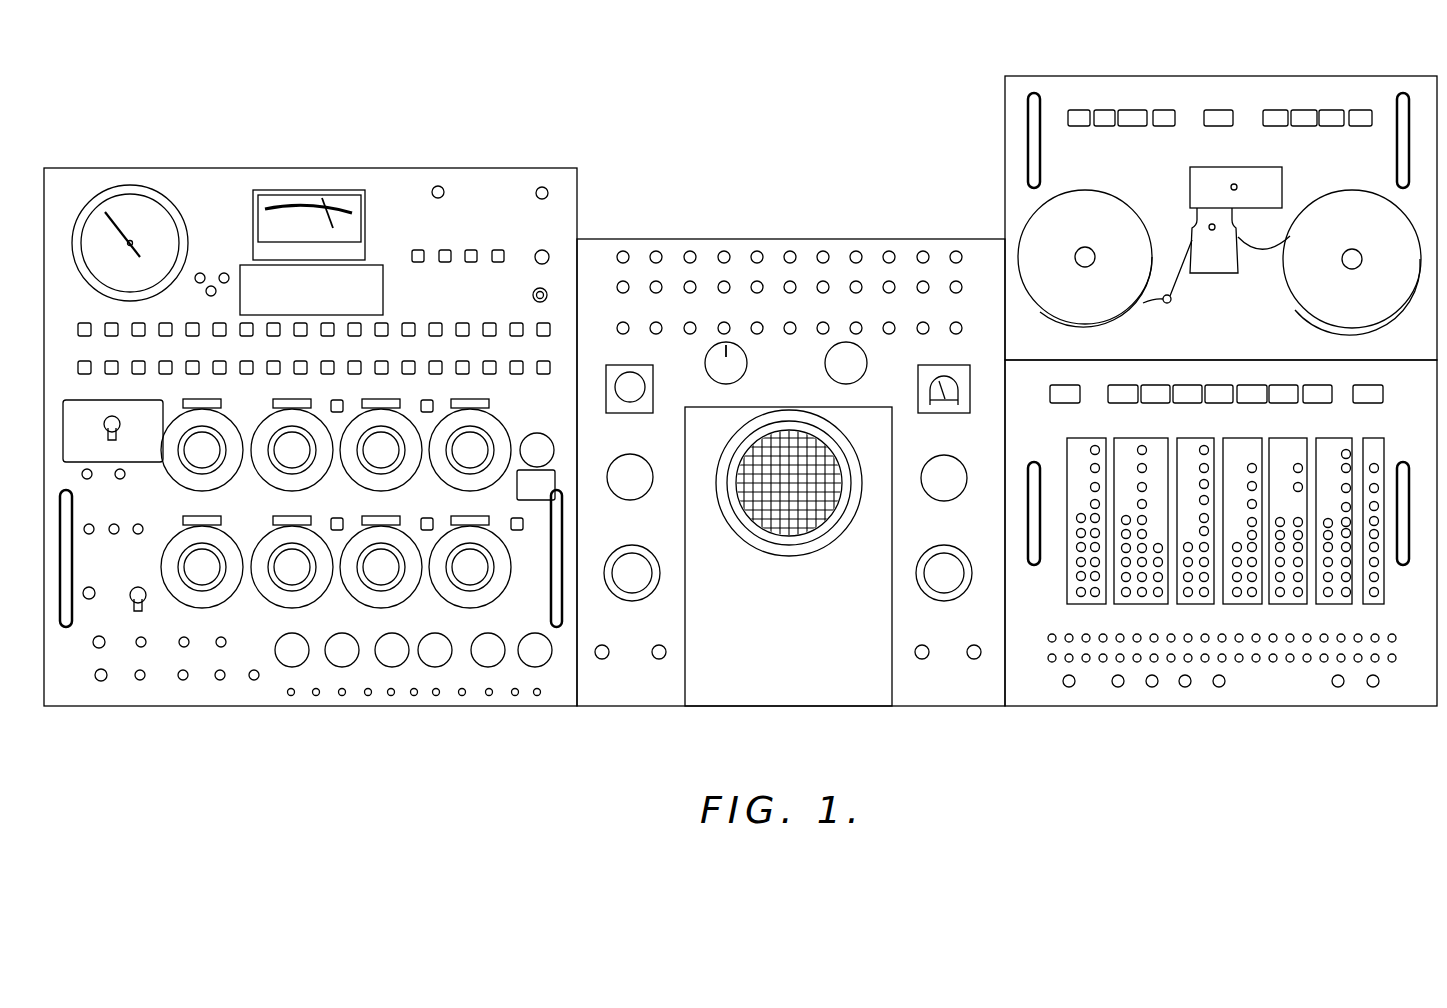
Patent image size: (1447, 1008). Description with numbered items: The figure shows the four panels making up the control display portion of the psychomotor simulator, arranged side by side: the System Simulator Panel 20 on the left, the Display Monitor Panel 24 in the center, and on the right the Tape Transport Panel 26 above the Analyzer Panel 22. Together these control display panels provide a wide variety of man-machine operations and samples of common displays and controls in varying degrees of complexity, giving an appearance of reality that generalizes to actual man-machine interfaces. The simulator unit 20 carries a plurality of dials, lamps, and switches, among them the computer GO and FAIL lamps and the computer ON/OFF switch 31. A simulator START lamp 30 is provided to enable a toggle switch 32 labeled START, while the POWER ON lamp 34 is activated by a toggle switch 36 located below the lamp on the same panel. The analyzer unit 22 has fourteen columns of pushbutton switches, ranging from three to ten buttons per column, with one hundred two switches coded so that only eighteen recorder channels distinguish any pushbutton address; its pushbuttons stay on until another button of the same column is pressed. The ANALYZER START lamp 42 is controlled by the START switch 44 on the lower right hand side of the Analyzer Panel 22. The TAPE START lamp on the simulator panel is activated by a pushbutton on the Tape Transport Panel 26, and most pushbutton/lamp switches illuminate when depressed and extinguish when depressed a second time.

The System Simulator Panel 20 is at (543, 167).
The Analyzer Panel 22 is at (1108, 702).
The Display Monitor Panel 24 is at (673, 238).
The Tape Transport Panel 26 is at (1004, 113).
The simulator START lamp 30 is at (444, 193).
The computer ON/OFF switch 31 is at (93, 587).
The toggle switch labeled START 32 is at (533, 295).
The POWER ON lamp 34 is at (116, 622).
The toggle switch 36 is at (97, 671).
The ANALYZER START lamp 42 is at (1331, 681).
The START switch 44 is at (1379, 681).